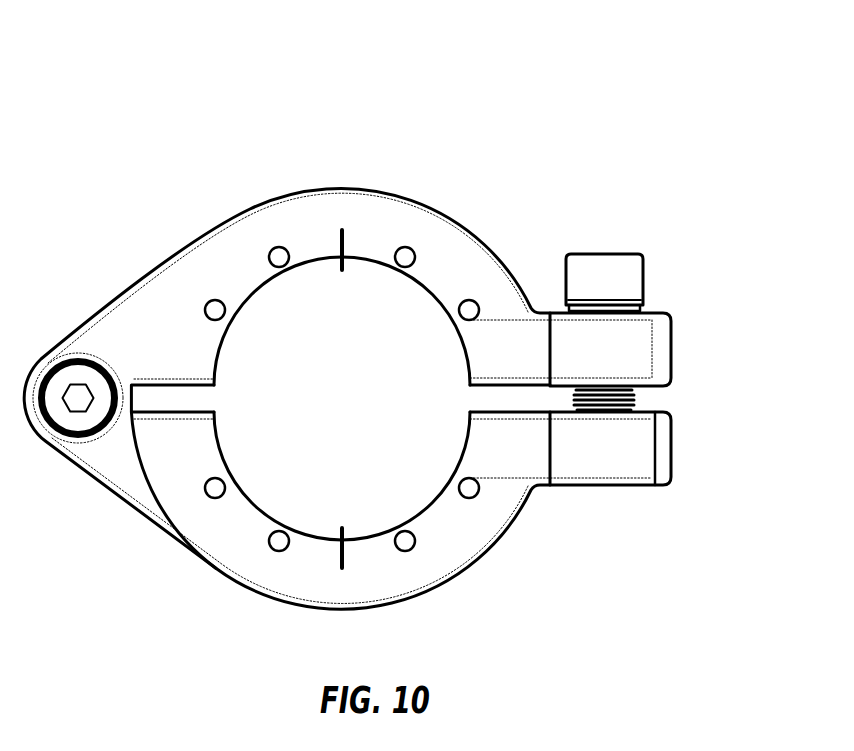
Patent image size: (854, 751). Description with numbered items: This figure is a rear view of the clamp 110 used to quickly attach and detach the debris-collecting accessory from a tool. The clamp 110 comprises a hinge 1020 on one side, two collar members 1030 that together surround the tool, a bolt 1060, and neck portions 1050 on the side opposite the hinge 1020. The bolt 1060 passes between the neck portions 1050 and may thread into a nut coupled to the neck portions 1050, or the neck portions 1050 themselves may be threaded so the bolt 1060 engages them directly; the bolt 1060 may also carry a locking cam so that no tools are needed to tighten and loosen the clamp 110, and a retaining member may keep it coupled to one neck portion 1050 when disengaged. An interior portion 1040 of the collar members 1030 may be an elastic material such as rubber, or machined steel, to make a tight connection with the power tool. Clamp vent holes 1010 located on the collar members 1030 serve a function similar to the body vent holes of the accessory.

The clamp 110 is at (488, 120).
The clamp vent holes 1010 is at (408, 258).
The hinge 1020 is at (84, 394).
The collar members 1030 is at (355, 217).
The interior portion 1040 is at (462, 458).
The neck portions 1050 is at (632, 348).
The bolt 1060 is at (600, 277).